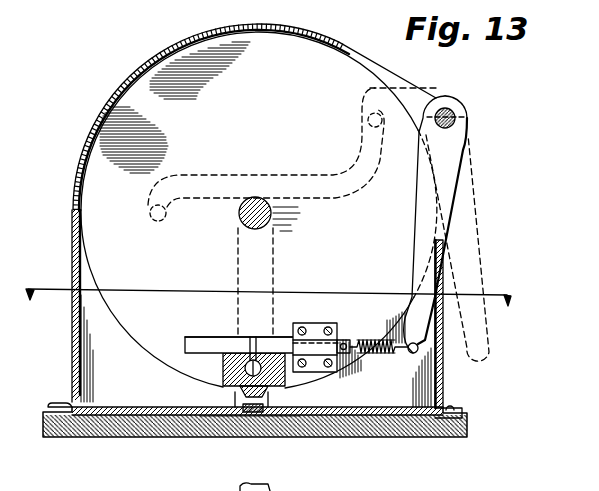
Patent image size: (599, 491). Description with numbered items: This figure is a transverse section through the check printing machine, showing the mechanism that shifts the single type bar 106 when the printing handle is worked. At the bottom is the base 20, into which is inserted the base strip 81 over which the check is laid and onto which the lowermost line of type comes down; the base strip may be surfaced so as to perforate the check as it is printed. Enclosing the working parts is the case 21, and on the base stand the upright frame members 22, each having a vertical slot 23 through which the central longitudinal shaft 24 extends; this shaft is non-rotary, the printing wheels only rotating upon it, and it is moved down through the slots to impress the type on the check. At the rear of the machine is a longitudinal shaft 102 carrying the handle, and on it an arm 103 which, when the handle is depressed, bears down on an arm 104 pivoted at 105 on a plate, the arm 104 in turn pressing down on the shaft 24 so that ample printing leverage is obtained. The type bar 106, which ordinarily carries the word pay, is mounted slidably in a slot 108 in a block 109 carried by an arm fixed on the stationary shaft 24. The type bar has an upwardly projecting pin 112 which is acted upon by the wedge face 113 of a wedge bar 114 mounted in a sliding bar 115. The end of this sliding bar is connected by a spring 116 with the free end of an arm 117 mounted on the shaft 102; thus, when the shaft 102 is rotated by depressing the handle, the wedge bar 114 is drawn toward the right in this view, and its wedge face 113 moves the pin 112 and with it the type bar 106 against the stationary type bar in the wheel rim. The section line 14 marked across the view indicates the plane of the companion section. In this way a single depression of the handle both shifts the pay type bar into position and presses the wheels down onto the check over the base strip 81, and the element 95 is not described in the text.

The base 20 is at (131, 438).
The case 21 is at (72, 164).
The upright frame members 22 is at (72, 375).
The vertical slots 23 is at (276, 264).
The central longitudinal shaft 24 is at (271, 203).
The section line 14- 14 is at (275, 289).
The base strip 81 is at (256, 413).
The element 95 is at (221, 487).
The longitudinal shaft 102 is at (456, 110).
The arm 103 is at (419, 91).
The arm 104 is at (289, 172).
The pivot 105 is at (150, 221).
The type bar 106 is at (222, 419).
The slot 108 is at (236, 388).
The block 109 is at (223, 368).
The pin 112 is at (257, 337).
The wedge face 113 is at (240, 345).
The wedge bar 114 is at (196, 337).
The sliding bar 115 is at (316, 342).
The spring 116 is at (400, 343).
The arm 117 is at (418, 217).